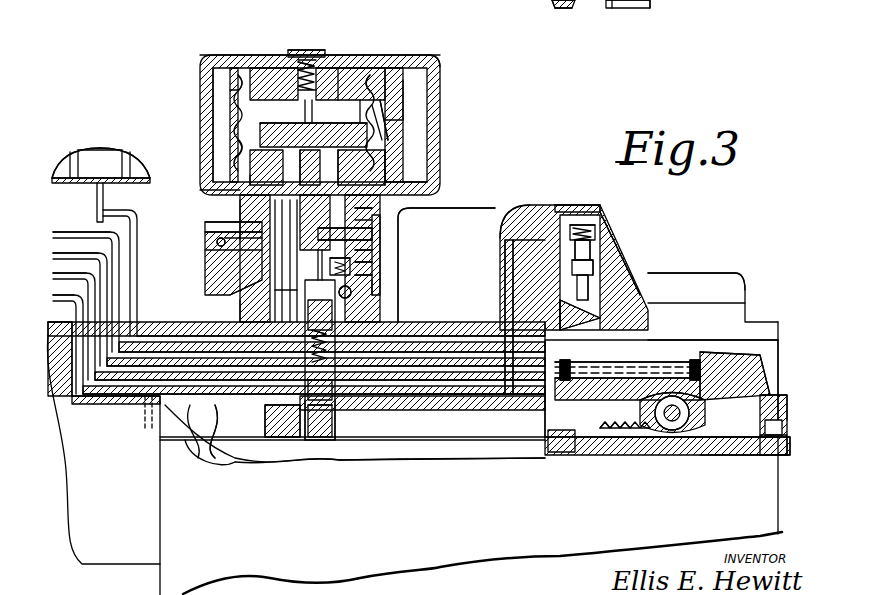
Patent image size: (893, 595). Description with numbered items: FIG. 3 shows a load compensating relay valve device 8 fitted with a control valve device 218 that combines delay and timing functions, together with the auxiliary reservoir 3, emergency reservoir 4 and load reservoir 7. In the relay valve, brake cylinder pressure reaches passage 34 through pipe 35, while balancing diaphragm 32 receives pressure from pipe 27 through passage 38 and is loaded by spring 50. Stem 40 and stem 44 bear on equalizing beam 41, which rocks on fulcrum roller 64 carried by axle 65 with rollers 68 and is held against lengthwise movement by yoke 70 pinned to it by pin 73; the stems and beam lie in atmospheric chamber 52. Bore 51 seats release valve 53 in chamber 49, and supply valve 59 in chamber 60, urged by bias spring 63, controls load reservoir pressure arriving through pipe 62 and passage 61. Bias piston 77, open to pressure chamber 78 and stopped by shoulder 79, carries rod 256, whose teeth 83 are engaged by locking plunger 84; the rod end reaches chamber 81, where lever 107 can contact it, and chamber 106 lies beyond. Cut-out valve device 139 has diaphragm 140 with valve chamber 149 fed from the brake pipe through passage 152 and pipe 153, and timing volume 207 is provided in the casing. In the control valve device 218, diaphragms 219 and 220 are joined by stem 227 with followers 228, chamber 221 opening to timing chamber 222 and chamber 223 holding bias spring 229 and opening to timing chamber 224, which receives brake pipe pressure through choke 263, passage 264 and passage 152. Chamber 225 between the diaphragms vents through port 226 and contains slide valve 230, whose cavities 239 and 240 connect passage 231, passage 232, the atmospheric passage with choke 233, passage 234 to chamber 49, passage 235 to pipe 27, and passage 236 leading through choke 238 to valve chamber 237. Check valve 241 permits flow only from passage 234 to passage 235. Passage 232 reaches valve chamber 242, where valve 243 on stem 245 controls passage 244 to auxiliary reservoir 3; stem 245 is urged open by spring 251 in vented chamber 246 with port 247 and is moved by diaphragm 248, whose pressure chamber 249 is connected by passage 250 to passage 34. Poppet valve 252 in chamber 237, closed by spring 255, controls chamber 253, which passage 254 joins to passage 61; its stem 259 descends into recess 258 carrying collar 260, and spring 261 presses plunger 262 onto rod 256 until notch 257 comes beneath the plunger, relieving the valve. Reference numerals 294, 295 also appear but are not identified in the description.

The auxiliary reservoir 3 is at (100, 152).
The emergency reservoir 4 is at (130, 160).
The load reservoir 7 is at (70, 160).
The load compensating relay valve device 8 is at (752, 286).
The pipe 27 is at (82, 232).
The balancing diaphragm 32 is at (572, 320).
The passage 34 is at (495, 398).
The pipe 35 is at (84, 253).
The passage 38 is at (582, 240).
The stem 40 is at (700, 385).
The equalizing beam 41 is at (660, 372).
The stem 44 is at (575, 375).
The release valve chamber 49 is at (595, 262).
The precompressed spring 50 is at (590, 318).
The axial bore 51 is at (585, 305).
The atmospheric chamber 52 is at (398, 462).
The release valve 53 is at (590, 285).
The fluid pressure supply valve 59 is at (596, 230).
The supply valve chamber 60 is at (608, 222).
The passage 61 is at (510, 240).
The pipe 62 is at (78, 296).
The bias spring 63 is at (582, 208).
The fulcrum roller 64 is at (690, 416).
The axle 65 is at (670, 432).
The rollers 68 is at (740, 375).
The yoke 70 is at (540, 402).
The pin 73 is at (640, 437).
The bias piston 77 is at (788, 410).
The control chamber 78 is at (788, 442).
The shoulder 79 is at (715, 455).
The chamber 81 is at (244, 460).
The teeth 83 is at (605, 435).
The locking plunger 84 is at (555, 440).
The chamber 106 is at (60, 395).
The lever 107 is at (184, 452).
The cut-out valve device 139 is at (516, 10).
The flexible diaphragm 140 is at (585, 5).
The valve chamber 149 is at (560, 8).
The passage 152 is at (214, 406).
The pipe 153 is at (88, 274).
The timing volume 207 is at (115, 408).
The control valve device 218 is at (262, 50).
The flexible diaphragm 219 is at (240, 80).
The flexible diaphragm 220 is at (345, 66).
The chamber 221 is at (232, 92).
The timing chamber 222 is at (212, 76).
The chamber 223 is at (438, 60).
The timing chamber 224 is at (412, 84).
The chamber 225 is at (305, 60).
The port 226 is at (340, 48).
The stem 227 is at (360, 98).
The followers 228 is at (388, 78).
The bias spring 229 is at (390, 100).
The slide valve 230 is at (390, 150).
The passage 231 is at (225, 192).
The passage 232 is at (250, 180).
The choke 233 is at (236, 152).
The passage 234 is at (340, 165).
The passage 235 is at (305, 175).
The passage 236 is at (420, 188).
The valve chamber 237 is at (420, 385).
The choke 238 is at (380, 290).
The cavity 239 is at (262, 128).
The cavity 240 is at (405, 118).
The check valve 241 is at (208, 258).
The valve chamber 242 is at (205, 226).
The valve 243 is at (217, 242).
The passage 244 is at (225, 288).
The stem 245 is at (372, 238).
The chamber 246 is at (372, 226).
The port 247 is at (352, 268).
The flexible diaphragm 248 is at (375, 262).
The pressure chamber 249 is at (375, 212).
The passage 250 is at (375, 278).
The spring 251 is at (375, 250).
The poppet valve 252 is at (352, 295).
The chamber 253 is at (278, 296).
The passage 254 is at (240, 305).
The spring 255 is at (410, 318).
The bias piston rod 256 is at (455, 460).
The notch 257 is at (335, 440).
The recess 258 is at (340, 350).
The stem 259 is at (285, 421).
The collar 260 is at (334, 440).
The spring 261 is at (305, 440).
The plunger 262 is at (315, 440).
The choke 263 is at (535, 207).
The passage 264 is at (240, 212).
The pipe 294 is at (538, 10).
The pipe 295 is at (494, 10).